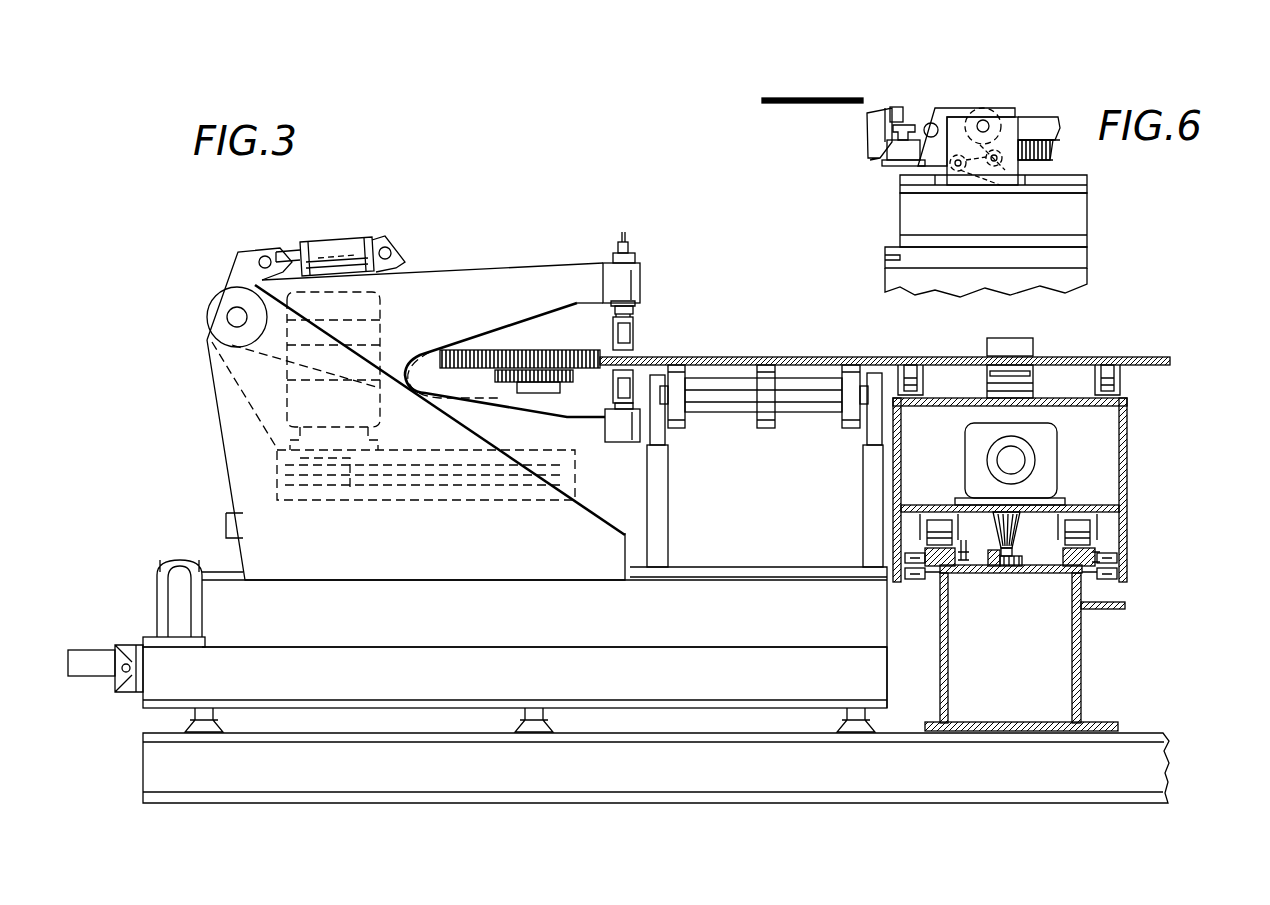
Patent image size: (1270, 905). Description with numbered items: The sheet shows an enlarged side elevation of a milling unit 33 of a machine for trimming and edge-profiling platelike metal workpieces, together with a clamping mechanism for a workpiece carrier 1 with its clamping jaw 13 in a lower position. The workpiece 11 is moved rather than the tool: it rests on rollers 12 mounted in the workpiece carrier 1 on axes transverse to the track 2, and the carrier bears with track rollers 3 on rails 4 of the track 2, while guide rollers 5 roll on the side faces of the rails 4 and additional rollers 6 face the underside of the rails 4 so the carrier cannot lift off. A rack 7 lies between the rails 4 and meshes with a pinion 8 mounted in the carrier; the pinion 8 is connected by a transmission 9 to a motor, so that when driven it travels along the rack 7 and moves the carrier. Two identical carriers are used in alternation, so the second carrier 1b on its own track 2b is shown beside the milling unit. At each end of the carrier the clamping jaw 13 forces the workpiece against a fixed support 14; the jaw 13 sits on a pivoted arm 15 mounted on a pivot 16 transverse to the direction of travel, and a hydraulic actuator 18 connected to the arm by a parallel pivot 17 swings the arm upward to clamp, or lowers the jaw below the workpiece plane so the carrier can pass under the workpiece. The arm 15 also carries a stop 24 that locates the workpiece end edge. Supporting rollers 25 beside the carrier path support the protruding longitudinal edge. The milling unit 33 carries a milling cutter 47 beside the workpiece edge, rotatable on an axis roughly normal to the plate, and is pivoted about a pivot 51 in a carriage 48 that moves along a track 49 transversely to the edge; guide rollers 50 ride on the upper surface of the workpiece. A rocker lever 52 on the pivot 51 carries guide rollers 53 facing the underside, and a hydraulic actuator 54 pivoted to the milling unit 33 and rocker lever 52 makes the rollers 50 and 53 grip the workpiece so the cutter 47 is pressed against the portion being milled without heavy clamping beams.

In FIG. 6, the workpiece carrier 1 is at (1037, 220).
In FIG. 3, the workpiece carrier 1b is at (1128, 455).
In FIG. 6, the track 2 is at (890, 265).
In FIG. 3, the track 2b is at (1050, 586).
In FIG. 3, the track rollers 3 is at (940, 530).
In FIG. 3, the rails 4 is at (1097, 556).
In FIG. 6, the rails 4 is at (893, 250).
In FIG. 3, the guide rollers 5 is at (940, 550).
In FIG. 3, the additional rollers 6 is at (918, 572).
In FIG. 3, the rack 7 is at (995, 575).
In FIG. 3, the pinion 8 is at (1025, 575).
In FIG. 3, the transmission 9 is at (1042, 436).
In FIG. 3, the workpiece 11 is at (938, 358).
In FIG. 6, the workpiece 11 is at (810, 97).
In FIG. 3, the rollers 12 is at (910, 372).
In FIG. 6, the rollers 12 is at (995, 108).
In FIG. 3, the clamping jaw 13 is at (1012, 345).
In FIG. 6, the clamping jaw 13 is at (897, 108).
In FIG. 3, the fixed support 14 is at (1012, 375).
In FIG. 6, the fixed support 14 is at (960, 115).
In FIG. 6, the pivoted arm 15 is at (875, 121).
In FIG. 6, the pivot 16 is at (934, 118).
In FIG. 6, the pivot 17 is at (1013, 167).
In FIG. 6, the hydraulic actuator 18 is at (1050, 125).
In FIG. 6, the stops 24 is at (900, 133).
In FIG. 3, the supporting rollers 25 is at (765, 385).
In FIG. 3, the milling unit 33 is at (510, 258).
In FIG. 3, the milling cutter 47 is at (577, 350).
In FIG. 3, the carriage 48 is at (298, 540).
In FIG. 3, the track 49 is at (248, 627).
In FIG. 3, the guide rollers 50 is at (625, 337).
In FIG. 3, the pivot 51 is at (233, 320).
In FIG. 3, the rocker lever 52 is at (432, 372).
In FIG. 3, the guide rollers 53 is at (622, 385).
In FIG. 3, the hydraulic actuator 54 is at (337, 250).